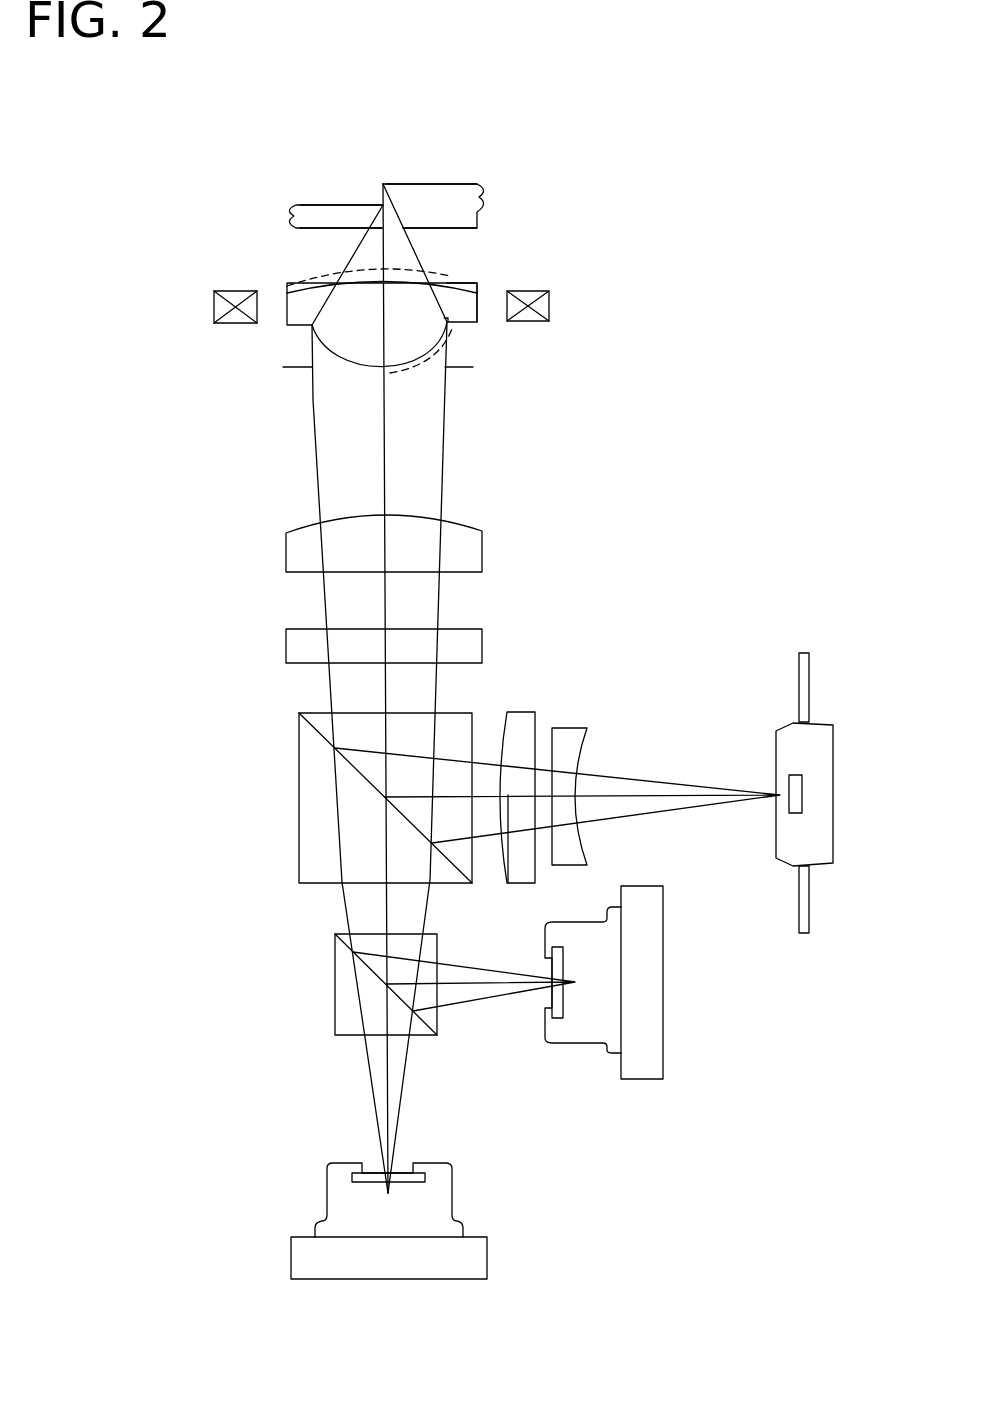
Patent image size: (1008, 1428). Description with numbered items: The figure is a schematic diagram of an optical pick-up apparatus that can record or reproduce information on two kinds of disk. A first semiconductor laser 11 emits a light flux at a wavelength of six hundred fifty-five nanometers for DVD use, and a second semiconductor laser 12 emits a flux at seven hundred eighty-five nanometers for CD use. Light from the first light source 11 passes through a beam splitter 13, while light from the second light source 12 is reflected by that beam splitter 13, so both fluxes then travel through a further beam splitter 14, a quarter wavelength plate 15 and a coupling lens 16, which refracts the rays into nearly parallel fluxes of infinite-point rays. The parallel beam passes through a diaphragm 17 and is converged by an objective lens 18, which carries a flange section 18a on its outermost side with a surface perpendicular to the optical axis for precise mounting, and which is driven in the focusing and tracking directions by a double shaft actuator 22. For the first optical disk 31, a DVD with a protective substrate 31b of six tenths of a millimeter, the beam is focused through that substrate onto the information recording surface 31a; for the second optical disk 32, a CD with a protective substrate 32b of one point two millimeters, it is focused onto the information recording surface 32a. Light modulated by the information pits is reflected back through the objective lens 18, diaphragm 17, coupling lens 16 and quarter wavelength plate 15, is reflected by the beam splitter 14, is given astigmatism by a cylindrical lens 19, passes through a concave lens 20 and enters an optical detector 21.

The first semiconductor laser 11 is at (388, 1280).
The second semiconductor laser 12 is at (645, 1080).
The beam splitter 13 is at (334, 984).
The beam splitter 14 is at (297, 797).
The quarter wavelength plate 15 is at (483, 647).
The coupling lens 16 is at (483, 552).
The diaphragm 17 is at (457, 372).
The objective lens 18 is at (409, 376).
The flange section 18a is at (463, 298).
The cylindrical lens 19 is at (522, 712).
The concave lens 20 is at (562, 727).
The optical detector 21 is at (836, 823).
The double shaft actuator 22 is at (550, 306).
The first optical disk 31 is at (301, 210).
The information recording surface 31a is at (337, 204).
The protective substrate 31b is at (322, 218).
The second optical disk 32 is at (446, 203).
The information recording surface 32a is at (428, 184).
The protective substrate 32b is at (435, 222).